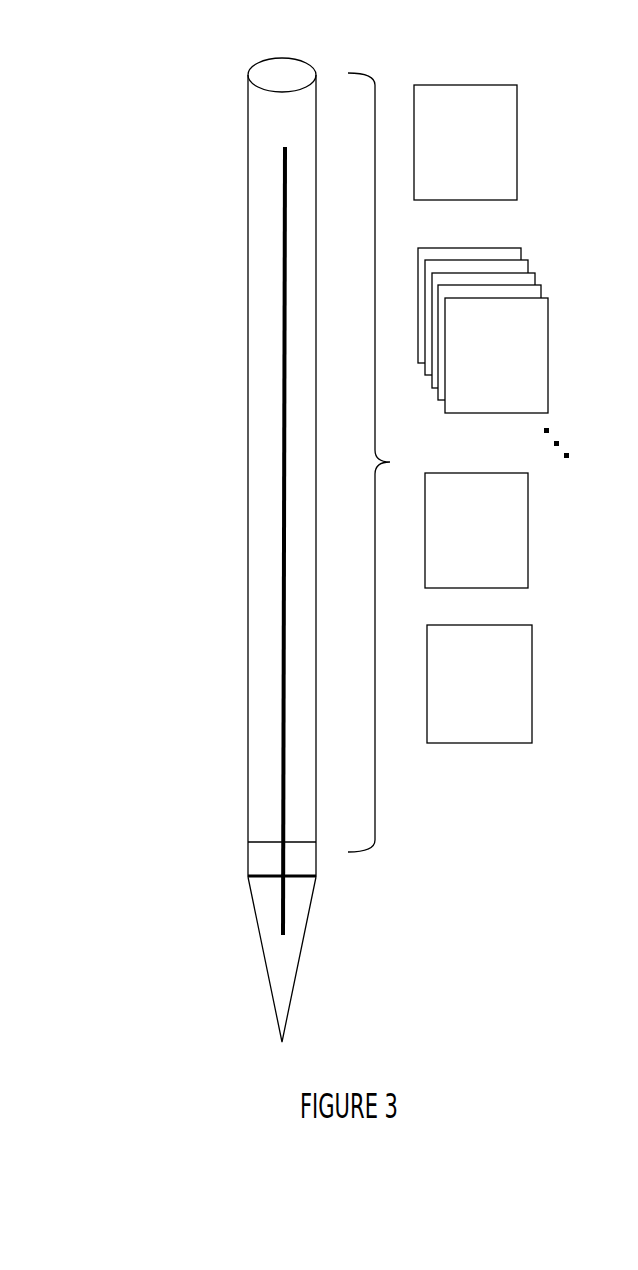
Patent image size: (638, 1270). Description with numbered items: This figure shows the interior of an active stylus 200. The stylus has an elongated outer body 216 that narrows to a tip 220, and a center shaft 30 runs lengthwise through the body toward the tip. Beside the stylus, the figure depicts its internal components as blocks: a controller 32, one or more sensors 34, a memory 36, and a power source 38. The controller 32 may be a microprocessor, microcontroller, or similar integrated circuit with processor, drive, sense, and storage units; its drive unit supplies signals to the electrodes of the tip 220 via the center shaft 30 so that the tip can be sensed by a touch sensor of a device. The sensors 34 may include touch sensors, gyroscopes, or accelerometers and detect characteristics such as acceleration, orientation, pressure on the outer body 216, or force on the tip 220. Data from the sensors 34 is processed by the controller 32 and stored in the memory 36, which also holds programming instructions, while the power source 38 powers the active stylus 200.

The active stylus 200 is at (221, 550).
The outer body 216 is at (240, 333).
The center shaft 30 is at (272, 757).
The tip 220 is at (298, 952).
The controller 32 is at (476, 174).
The sensors 34 is at (507, 382).
The memory 36 is at (487, 561).
The power source 38 is at (490, 732).